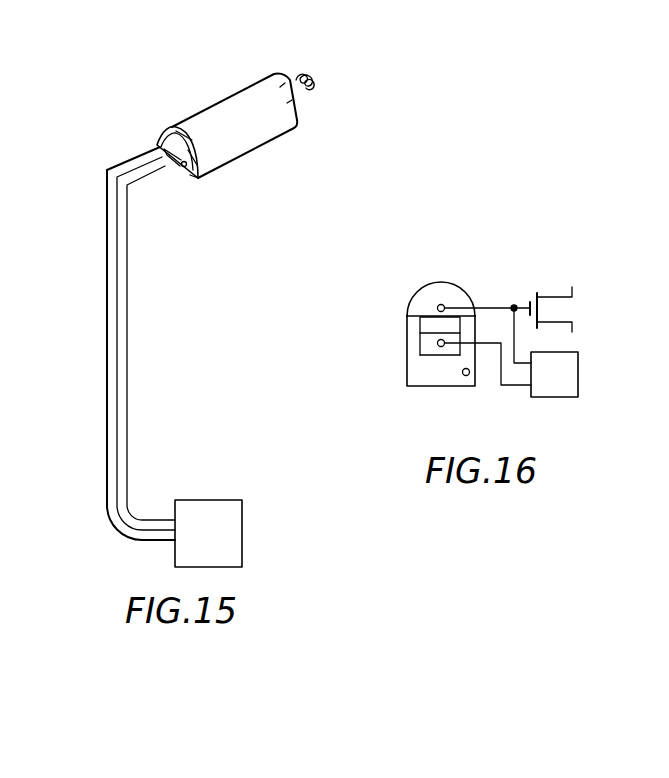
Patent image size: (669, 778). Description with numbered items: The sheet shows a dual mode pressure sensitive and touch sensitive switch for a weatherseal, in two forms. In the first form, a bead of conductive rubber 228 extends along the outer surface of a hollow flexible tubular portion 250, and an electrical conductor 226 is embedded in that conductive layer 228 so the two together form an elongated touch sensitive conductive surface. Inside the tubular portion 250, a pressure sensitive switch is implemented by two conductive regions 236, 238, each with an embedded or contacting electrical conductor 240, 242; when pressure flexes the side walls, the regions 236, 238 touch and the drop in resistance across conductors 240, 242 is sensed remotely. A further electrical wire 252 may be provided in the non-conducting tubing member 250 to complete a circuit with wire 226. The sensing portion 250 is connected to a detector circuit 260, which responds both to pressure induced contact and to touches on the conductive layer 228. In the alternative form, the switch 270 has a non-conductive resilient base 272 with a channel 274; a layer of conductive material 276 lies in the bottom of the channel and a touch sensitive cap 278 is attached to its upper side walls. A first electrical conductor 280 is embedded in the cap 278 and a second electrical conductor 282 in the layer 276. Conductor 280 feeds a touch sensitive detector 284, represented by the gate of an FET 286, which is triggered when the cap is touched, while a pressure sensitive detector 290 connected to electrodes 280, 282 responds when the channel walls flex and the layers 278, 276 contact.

In FIG. 15, the electrical conductor 226 is at (171, 130).
In FIG. 15, the bead of conductive rubber 228 is at (191, 127).
In FIG. 15, the conductive region 236 is at (200, 162).
In FIG. 15, the conductive region 238 is at (197, 144).
In FIG. 15, the electrical conductor 240 is at (168, 170).
In FIG. 15, the electrical conductor 242 is at (158, 150).
In FIG. 15, the hollow flexible tubular portion 250 is at (290, 128).
In FIG. 15, the electrical wire 252 is at (192, 178).
In FIG. 16, the electrical wire 252 is at (464, 377).
In FIG. 15, the detector circuit 260 is at (225, 507).
In FIG. 16, the dual mode switch 270 is at (389, 301).
In FIG. 16, the base 272 is at (415, 382).
In FIG. 16, the channel 274 is at (427, 327).
In FIG. 16, the layer of conductive material 276 is at (428, 357).
In FIG. 16, the touch sensitive cap 278 is at (422, 298).
In FIG. 16, the first electrical conductor 280 is at (444, 306).
In FIG. 16, the second electrical conductor 282 is at (438, 343).
In FIG. 16, the touch sensitive detector 284 is at (535, 263).
In FIG. 16, the FET 286 is at (543, 323).
In FIG. 16, the pressure sensitive detector 290 is at (554, 374).